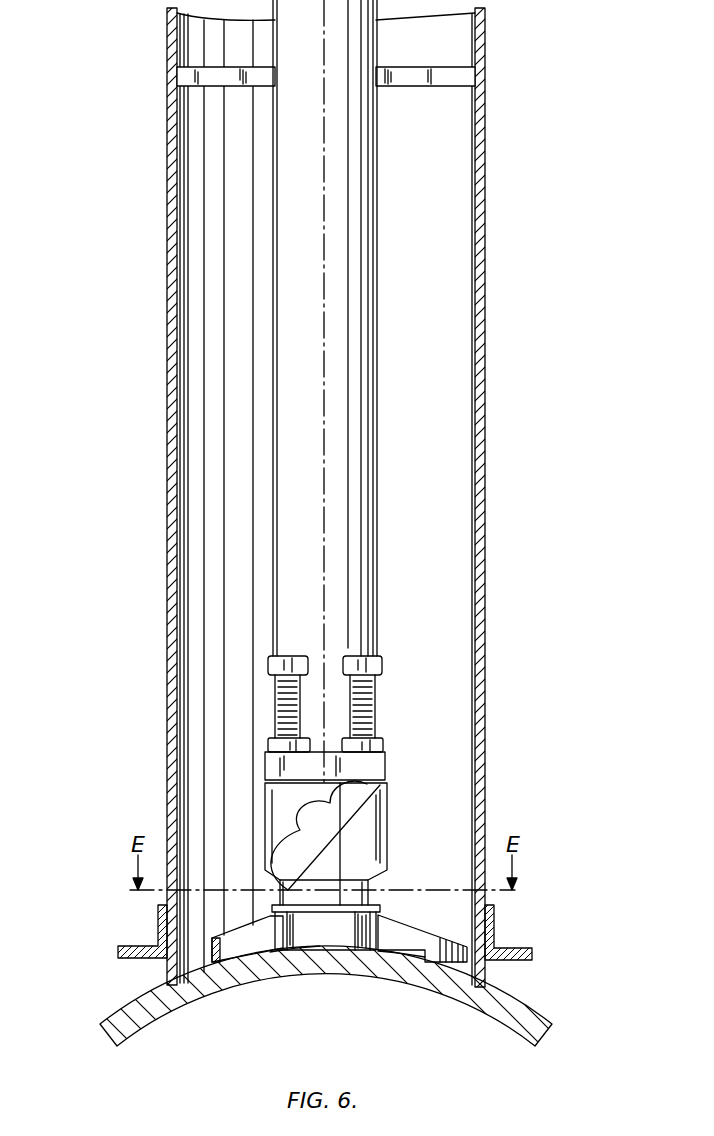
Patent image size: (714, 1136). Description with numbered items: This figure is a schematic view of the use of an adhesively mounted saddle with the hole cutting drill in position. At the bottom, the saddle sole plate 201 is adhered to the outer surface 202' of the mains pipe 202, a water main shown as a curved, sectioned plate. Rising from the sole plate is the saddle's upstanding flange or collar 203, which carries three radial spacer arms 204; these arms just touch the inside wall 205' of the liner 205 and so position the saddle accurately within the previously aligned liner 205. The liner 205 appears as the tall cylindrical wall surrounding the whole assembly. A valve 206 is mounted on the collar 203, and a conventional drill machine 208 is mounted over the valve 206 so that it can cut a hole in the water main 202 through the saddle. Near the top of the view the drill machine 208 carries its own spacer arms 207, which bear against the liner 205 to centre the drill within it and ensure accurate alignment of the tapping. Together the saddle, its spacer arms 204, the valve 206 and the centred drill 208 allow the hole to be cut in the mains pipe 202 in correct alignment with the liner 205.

The saddle sole plate 201 is at (389, 960).
The mains pipe 202 is at (303, 996).
The outer surface of mains pipe 202' is at (279, 984).
The upstanding flange or collar 203 is at (360, 921).
The radial spacer arms 204 is at (240, 936).
The liner 205 is at (358, 497).
The inside wall of liner 205' is at (283, 499).
The valve 206 is at (365, 843).
The spacer arms of drill 207 is at (200, 75).
The drill machine 208 is at (348, 457).